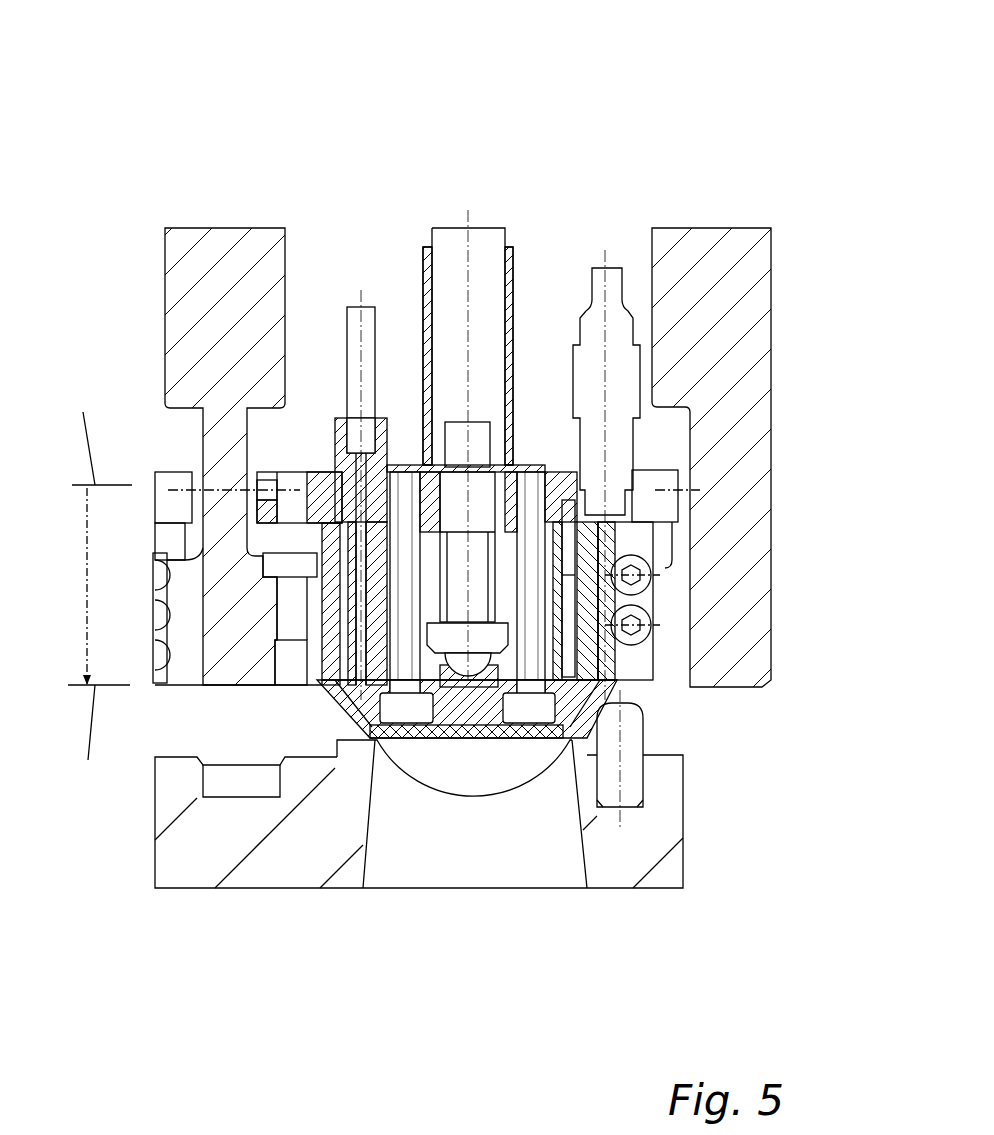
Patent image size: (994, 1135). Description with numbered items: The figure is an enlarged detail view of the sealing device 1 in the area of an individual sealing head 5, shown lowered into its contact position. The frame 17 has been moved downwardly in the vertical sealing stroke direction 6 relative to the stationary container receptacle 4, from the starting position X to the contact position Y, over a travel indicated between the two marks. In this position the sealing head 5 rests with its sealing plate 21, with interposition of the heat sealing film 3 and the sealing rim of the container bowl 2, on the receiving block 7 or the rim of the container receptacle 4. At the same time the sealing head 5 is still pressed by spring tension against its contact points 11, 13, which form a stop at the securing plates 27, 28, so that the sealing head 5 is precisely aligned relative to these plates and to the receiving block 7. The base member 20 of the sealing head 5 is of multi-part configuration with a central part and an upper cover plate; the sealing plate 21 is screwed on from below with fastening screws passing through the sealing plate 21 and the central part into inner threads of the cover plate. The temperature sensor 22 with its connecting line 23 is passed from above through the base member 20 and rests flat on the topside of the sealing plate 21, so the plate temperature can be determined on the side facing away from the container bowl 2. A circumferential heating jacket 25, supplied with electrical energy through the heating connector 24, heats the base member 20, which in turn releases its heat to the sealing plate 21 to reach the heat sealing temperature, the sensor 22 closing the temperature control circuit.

The sealing device 1 is at (621, 86).
The container bowl 2 is at (512, 800).
The heat sealing film 3 is at (327, 740).
The container receptacle 4 is at (476, 838).
The sealing head 5 is at (327, 708).
The vertical sealing stroke direction 6 is at (87, 598).
The receiving block 7 is at (210, 863).
The contact point 11 is at (258, 562).
The contact point 13 is at (673, 565).
The frame 17 is at (188, 210).
The base member 20 is at (587, 605).
The sealing plate 21 is at (593, 694).
The temperature sensor 22 is at (345, 540).
The connecting line 23 is at (352, 312).
The heating connector 24 is at (588, 381).
The heating jacket 25 is at (328, 615).
The securing plate 27 is at (195, 300).
The securing plate 28 is at (722, 237).